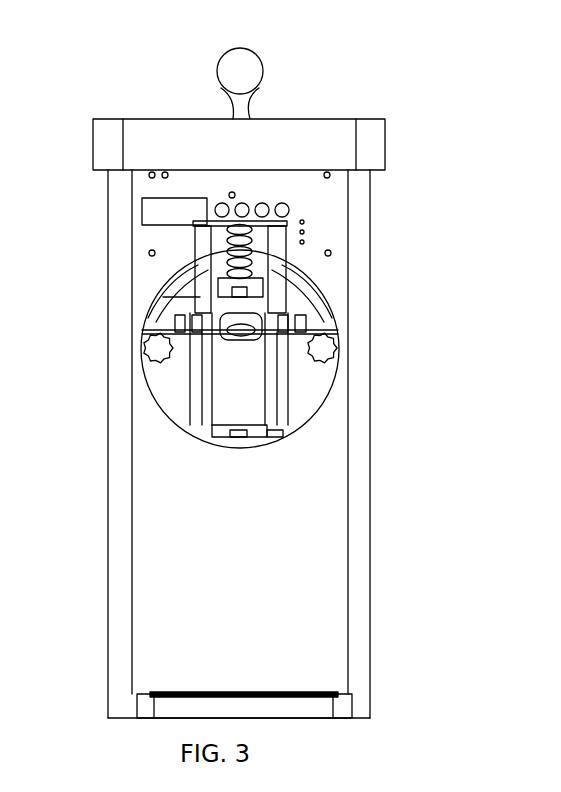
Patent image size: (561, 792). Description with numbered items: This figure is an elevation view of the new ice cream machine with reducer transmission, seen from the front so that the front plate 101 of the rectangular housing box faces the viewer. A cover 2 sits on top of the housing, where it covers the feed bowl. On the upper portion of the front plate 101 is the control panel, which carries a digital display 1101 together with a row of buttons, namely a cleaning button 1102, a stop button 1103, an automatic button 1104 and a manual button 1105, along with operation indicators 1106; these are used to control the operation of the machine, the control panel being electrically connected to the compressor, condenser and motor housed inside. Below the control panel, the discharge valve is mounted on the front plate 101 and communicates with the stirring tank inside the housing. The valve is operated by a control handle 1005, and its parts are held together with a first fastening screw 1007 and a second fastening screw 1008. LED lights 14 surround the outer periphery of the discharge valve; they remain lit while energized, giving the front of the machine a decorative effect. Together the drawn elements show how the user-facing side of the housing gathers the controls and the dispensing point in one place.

The cover 2 is at (132, 143).
The LED lights 14 is at (160, 292).
The front plate 101 is at (283, 630).
The digital display 1101 is at (182, 210).
The cleaning button 1102 is at (224, 204).
The stop button 1103 is at (243, 204).
The automatic button 1104 is at (263, 204).
The manual button 1105 is at (289, 210).
The operation indicators 1106 is at (304, 222).
The first fastening screw 1007 is at (208, 261).
The second fastening screw 1008 is at (268, 278).
The control handle 1005 is at (338, 332).